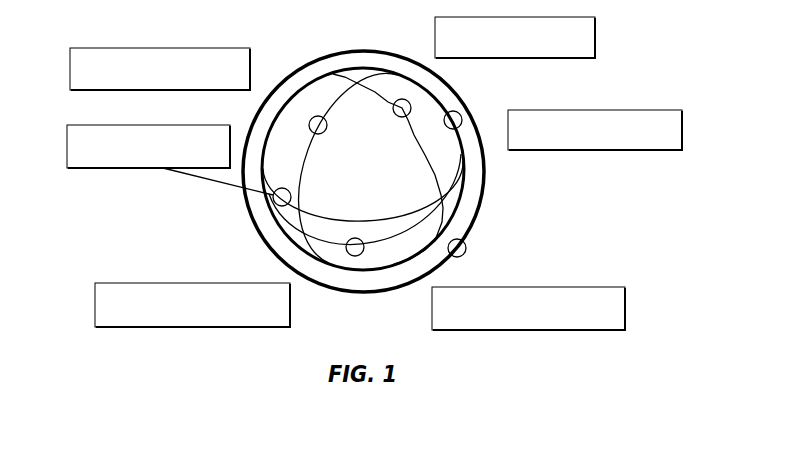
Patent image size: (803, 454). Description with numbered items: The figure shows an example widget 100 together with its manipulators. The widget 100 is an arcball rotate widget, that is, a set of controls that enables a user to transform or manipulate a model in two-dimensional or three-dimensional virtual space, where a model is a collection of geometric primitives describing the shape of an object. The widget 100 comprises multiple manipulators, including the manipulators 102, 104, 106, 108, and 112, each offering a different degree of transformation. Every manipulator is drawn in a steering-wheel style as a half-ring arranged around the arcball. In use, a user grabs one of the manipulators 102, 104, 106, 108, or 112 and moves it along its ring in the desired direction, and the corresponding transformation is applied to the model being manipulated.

The widget 100 is at (334, 34).
The manipulator 102 is at (410, 104).
The manipulator 104 is at (462, 121).
The manipulator 106 is at (463, 255).
The manipulator 108 is at (346, 250).
The manipulator 112 is at (311, 119).